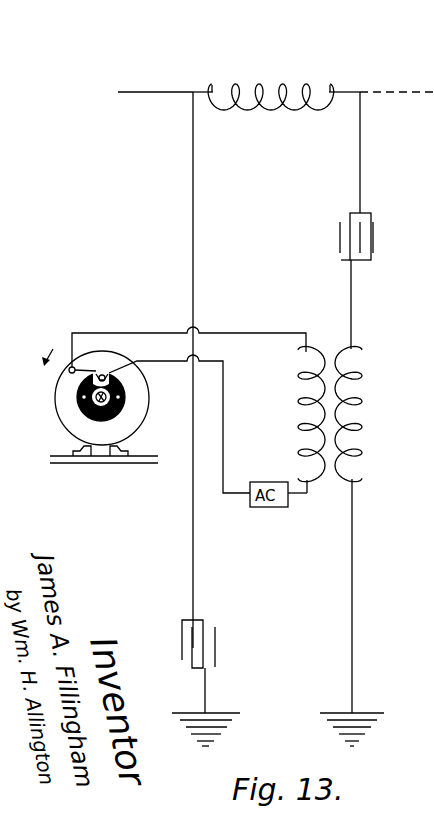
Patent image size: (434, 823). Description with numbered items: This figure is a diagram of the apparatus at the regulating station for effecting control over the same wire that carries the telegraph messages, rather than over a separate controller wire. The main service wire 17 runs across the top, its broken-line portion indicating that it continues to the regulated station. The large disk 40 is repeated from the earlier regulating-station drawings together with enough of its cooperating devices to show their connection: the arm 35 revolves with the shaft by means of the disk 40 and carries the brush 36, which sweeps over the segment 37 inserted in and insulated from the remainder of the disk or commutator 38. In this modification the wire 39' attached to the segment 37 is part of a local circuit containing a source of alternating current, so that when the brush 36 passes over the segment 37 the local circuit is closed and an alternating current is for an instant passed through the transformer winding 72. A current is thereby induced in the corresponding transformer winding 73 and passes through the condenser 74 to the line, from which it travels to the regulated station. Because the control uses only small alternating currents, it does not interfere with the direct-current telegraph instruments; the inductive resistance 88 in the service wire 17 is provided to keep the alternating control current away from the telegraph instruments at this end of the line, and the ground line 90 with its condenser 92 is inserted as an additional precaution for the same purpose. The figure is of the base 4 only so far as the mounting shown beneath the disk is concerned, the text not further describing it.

The base 4 is at (105, 457).
The main service wire 17 is at (160, 91).
The arm 35 is at (263, 332).
The brush 36 is at (97, 372).
The segment 37 is at (100, 369).
The disk or commutator 38 is at (118, 414).
The wire 39' is at (184, 424).
The large disk 40 is at (68, 419).
The transformer winding 72 is at (303, 425).
The transformer winding 73 is at (369, 403).
The condenser 74 is at (374, 236).
The inductive resistance 88 is at (271, 109).
The ground line 90 is at (195, 242).
The condenser 92 is at (218, 644).